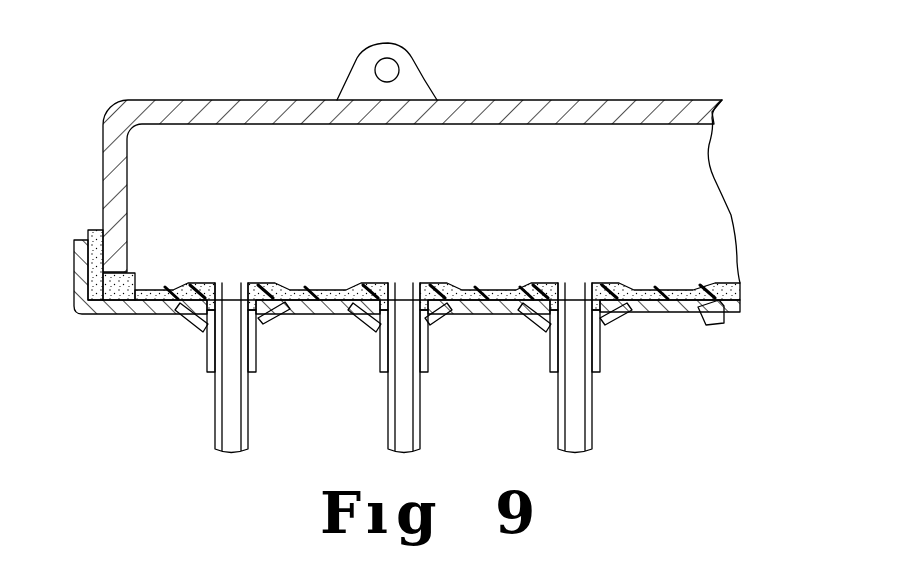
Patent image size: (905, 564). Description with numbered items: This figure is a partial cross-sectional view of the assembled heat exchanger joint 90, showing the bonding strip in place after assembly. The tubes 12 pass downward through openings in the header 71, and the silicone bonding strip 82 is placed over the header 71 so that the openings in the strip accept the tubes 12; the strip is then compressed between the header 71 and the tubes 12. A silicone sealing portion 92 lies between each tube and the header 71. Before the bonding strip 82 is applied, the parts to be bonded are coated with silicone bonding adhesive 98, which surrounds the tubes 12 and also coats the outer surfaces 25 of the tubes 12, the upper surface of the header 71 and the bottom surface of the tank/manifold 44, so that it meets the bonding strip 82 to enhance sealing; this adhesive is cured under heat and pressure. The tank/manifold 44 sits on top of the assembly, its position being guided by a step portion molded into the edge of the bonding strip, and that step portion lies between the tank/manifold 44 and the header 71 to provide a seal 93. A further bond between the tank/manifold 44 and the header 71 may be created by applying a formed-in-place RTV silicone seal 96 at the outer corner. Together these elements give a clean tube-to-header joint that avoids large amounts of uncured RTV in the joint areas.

The electrical connector assembly 90 is at (730, 68).
The tank/manifold 44 is at (216, 99).
The formed in place RTV silicone seal 96 is at (87, 228).
The seal 93 is at (113, 266).
The bonding strip 82 is at (468, 287).
The header 71 is at (80, 318).
The silicone sealing portion 92 is at (425, 318).
The silicone bonding adhesive 98 is at (209, 357).
The tubes 12 is at (403, 374).
The outer surfaces of the tubes 25 is at (386, 426).